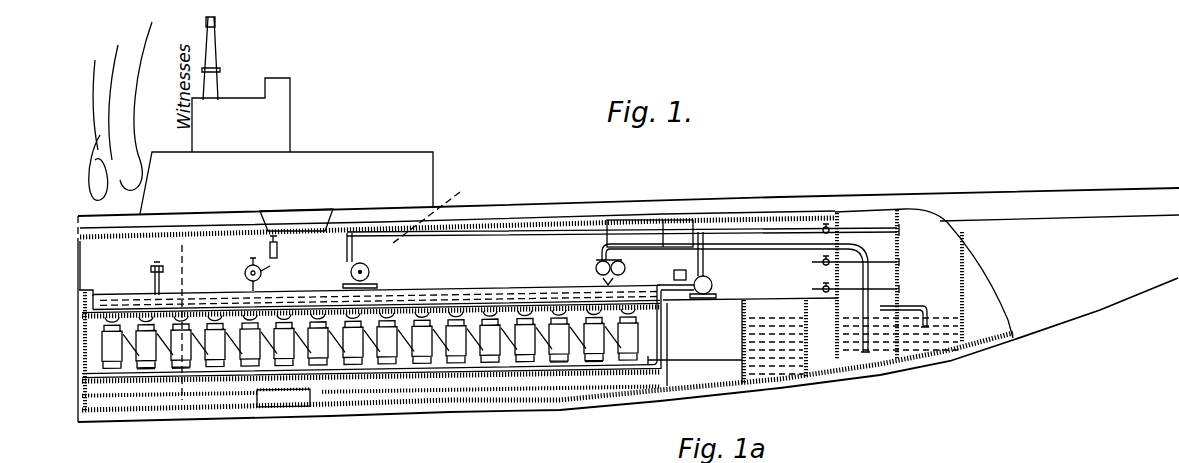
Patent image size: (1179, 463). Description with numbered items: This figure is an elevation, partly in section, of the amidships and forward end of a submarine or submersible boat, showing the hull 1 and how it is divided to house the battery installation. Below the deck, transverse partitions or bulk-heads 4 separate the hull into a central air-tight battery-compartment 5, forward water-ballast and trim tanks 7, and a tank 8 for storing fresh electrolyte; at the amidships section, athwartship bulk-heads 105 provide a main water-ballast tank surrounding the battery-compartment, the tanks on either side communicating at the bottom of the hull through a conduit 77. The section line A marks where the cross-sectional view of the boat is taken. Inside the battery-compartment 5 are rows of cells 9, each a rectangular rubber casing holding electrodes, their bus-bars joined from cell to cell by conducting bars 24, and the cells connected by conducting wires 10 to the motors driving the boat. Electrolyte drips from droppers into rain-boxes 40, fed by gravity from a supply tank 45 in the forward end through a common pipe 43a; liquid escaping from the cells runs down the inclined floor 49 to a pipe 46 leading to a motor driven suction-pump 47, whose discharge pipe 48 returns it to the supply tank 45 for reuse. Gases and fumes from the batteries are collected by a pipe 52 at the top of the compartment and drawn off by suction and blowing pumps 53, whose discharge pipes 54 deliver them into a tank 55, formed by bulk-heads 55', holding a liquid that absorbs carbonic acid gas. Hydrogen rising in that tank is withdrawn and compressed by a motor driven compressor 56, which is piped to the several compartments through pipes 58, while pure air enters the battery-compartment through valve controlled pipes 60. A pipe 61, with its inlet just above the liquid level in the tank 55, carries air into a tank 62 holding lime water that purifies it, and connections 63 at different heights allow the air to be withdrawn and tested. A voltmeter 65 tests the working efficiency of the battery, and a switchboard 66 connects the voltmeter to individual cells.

The hull 1 is at (628, 219).
The transverse partitions or bulk-heads 4 is at (87, 393).
The battery-compartment 5 is at (413, 316).
The forward water-ballast and trim tanks 7 is at (743, 341).
The tank for storage of fresh electrolyte 8 is at (768, 372).
The cell 9 is at (212, 367).
The conducting wires 10 is at (94, 291).
The conducting bar 24 is at (153, 358).
The rain-boxes 40 is at (550, 317).
The common pipe 43a is at (680, 274).
The supply tank 45 is at (679, 235).
The pipe 46 is at (403, 388).
The motor driven suction-pump 47 is at (713, 285).
The discharge pipe 48 is at (706, 260).
The inclined floor 49 is at (223, 395).
The pipe 52 is at (482, 291).
The suction and blowing pumps 53 is at (596, 268).
The discharge pipes 54 is at (780, 251).
The tank 55 is at (865, 262).
The bulk-heads 55' is at (865, 315).
The motor driven compressor 56 is at (371, 273).
The pipes 58 is at (318, 232).
The valve controlled pipes 60 is at (163, 282).
The pipe 61 is at (904, 308).
The tank 62 is at (902, 285).
The connections 63 is at (822, 227).
The voltmeter 65 is at (272, 240).
The switchboard 66 is at (245, 269).
The conduit 77 is at (270, 404).
The athwartship partitions or bulk-heads 105 is at (180, 254).
The section line A— A is at (293, 441).